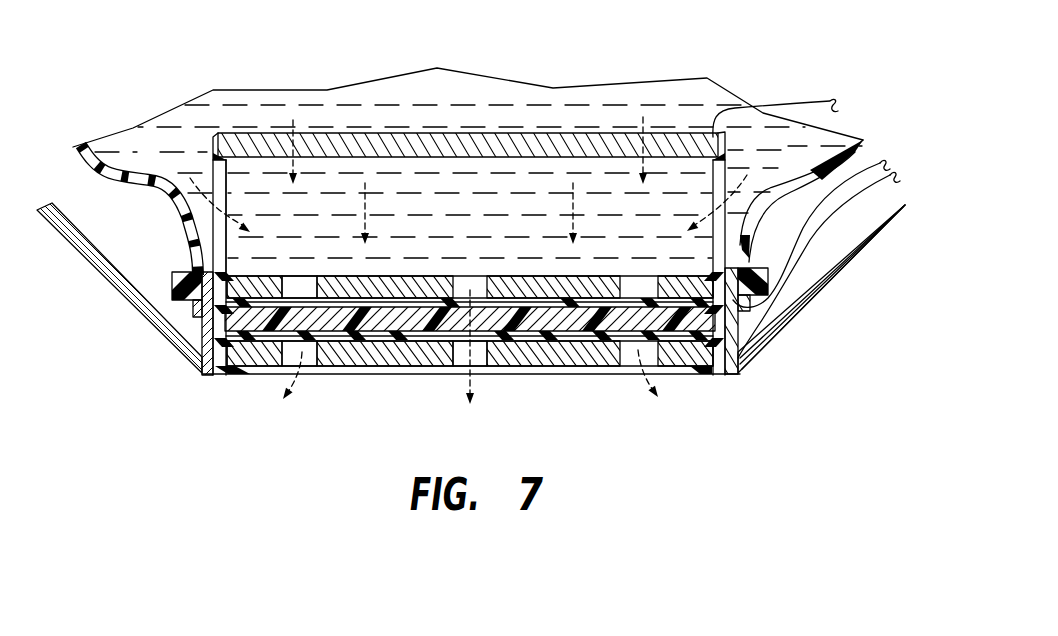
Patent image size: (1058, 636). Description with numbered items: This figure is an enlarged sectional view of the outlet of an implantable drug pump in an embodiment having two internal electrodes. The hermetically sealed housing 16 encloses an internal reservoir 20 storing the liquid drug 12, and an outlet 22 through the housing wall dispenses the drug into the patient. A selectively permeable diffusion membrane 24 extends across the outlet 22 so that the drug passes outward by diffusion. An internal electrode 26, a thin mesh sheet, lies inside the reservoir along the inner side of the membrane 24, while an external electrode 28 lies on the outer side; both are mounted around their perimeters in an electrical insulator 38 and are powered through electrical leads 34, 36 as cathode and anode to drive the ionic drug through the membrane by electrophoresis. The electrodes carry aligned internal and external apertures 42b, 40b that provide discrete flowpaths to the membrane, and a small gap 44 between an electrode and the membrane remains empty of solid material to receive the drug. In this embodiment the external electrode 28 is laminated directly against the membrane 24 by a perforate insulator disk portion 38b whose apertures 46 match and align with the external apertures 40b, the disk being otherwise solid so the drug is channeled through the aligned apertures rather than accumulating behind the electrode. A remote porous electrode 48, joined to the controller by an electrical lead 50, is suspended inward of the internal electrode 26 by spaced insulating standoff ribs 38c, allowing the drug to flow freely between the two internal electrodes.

The liquid drug 12 is at (445, 131).
The housing 16 is at (102, 267).
The internal reservoir 20 is at (233, 90).
The outlet 22 is at (261, 386).
The diffusion membrane 24 is at (518, 307).
The internal electrode 26 is at (438, 276).
The external electrode 28 is at (343, 368).
The electrical lead 34 is at (870, 228).
The electrical lead 36 is at (862, 232).
The electrical insulator 38 is at (240, 270).
The insulator disk portion 38b is at (408, 340).
The standoff ribs 38c is at (226, 177).
The external apertures 40b is at (641, 366).
The internal apertures 42b is at (632, 276).
The gap 44 is at (352, 305).
The apertures 46 is at (315, 342).
The remote porous electrode 48 is at (618, 133).
The electrical lead 50 is at (795, 113).